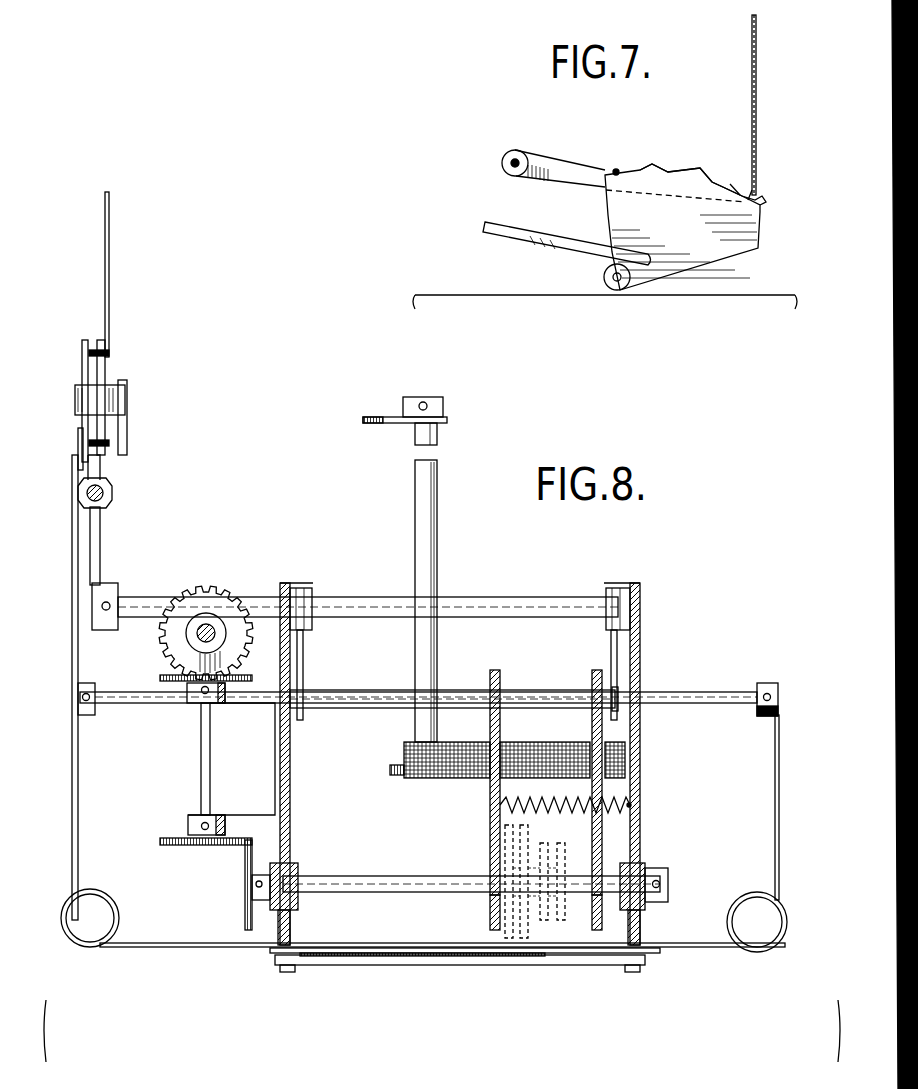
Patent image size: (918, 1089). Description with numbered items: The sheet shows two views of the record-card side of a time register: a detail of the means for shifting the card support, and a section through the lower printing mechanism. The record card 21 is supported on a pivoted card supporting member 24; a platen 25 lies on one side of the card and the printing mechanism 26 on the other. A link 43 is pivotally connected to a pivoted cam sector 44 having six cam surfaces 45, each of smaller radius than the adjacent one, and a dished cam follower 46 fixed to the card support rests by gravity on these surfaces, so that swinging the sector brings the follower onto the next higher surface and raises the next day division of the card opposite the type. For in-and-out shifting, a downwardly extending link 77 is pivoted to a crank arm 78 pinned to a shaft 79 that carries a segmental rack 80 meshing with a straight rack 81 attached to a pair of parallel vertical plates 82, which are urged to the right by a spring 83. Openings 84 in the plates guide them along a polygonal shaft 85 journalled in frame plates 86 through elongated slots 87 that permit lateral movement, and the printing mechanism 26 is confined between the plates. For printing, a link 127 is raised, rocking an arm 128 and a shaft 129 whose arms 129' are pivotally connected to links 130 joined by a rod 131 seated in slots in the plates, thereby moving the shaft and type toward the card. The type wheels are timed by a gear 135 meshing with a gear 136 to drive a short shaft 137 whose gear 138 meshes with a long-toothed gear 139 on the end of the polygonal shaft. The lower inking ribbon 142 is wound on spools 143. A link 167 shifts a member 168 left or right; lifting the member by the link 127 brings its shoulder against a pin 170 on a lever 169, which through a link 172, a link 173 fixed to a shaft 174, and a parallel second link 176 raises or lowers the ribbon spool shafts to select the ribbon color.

In FIG. 7, the record card 21 is at (757, 92).
In FIG. 8, the record card 21 is at (395, 956).
In FIG. 7, the pivoted card supporting member 24 is at (553, 168).
In FIG. 8, the platen 25 is at (490, 956).
In FIG. 8, the printing mechanism 26 is at (530, 840).
In FIG. 7, the link 43 is at (553, 238).
In FIG. 7, the pivoted cam sector 44 is at (630, 213).
In FIG. 7, the cam surfaces 45 is at (678, 170).
In FIG. 7, the dished cam follower 46 is at (617, 168).
In FIG. 8, the link 77 is at (373, 425).
In FIG. 8, the crank arm 78 is at (398, 420).
In FIG. 8, the shaft 79 is at (425, 514).
In FIG. 8, the segmental rack 80 is at (392, 770).
In FIG. 8, the straight rack 81 is at (460, 760).
In FIG. 8, the parallel vertical plates 82 is at (590, 682).
In FIG. 8, the spring 83 is at (525, 800).
In FIG. 8, the openings 84 is at (492, 893).
In FIG. 8, the polygonal shaft 85 is at (405, 878).
In FIG. 8, the frame plates 86 is at (286, 835).
In FIG. 8, the elongated slots 87 is at (290, 897).
In FIG. 8, the link 127 is at (105, 494).
In FIG. 8, the arm 128 is at (94, 548).
In FIG. 8, the shaft 129 is at (355, 589).
In FIG. 8, the arms 129' is at (460, 589).
In FIG. 8, the links 130 is at (302, 667).
In FIG. 8, the rod 131 is at (333, 710).
In FIG. 8, the gear 135 is at (212, 600).
In FIG. 8, the gear 136 is at (172, 675).
In FIG. 8, the short shaft 137 is at (203, 757).
In FIG. 8, the gear 138 is at (170, 843).
In FIG. 8, the gear 139 is at (247, 893).
In FIG. 8, the lower inking ribbon 142 is at (203, 947).
In FIG. 8, the spools 143 is at (105, 916).
In FIG. 8, the link 167 is at (109, 280).
In FIG. 8, the member 168 is at (108, 382).
In FIG. 8, the lever 169 is at (83, 357).
In FIG. 8, the pin 170 is at (110, 352).
In FIG. 8, the link 172 is at (80, 457).
In FIG. 8, the link 173 is at (78, 540).
In FIG. 8, the shaft 174 is at (163, 698).
In FIG. 8, the second link 176 is at (780, 833).